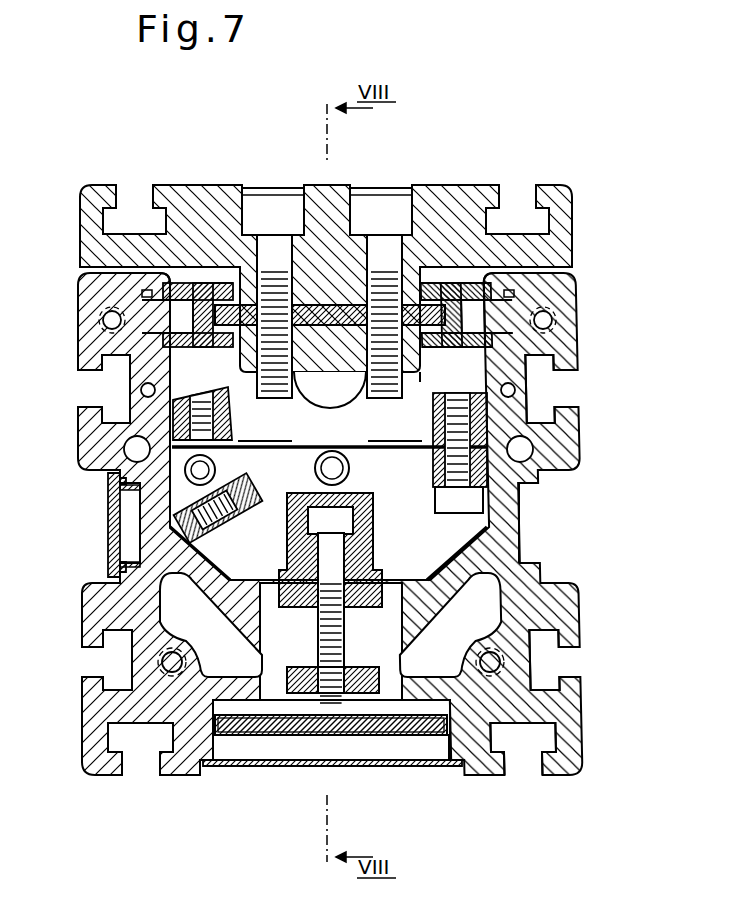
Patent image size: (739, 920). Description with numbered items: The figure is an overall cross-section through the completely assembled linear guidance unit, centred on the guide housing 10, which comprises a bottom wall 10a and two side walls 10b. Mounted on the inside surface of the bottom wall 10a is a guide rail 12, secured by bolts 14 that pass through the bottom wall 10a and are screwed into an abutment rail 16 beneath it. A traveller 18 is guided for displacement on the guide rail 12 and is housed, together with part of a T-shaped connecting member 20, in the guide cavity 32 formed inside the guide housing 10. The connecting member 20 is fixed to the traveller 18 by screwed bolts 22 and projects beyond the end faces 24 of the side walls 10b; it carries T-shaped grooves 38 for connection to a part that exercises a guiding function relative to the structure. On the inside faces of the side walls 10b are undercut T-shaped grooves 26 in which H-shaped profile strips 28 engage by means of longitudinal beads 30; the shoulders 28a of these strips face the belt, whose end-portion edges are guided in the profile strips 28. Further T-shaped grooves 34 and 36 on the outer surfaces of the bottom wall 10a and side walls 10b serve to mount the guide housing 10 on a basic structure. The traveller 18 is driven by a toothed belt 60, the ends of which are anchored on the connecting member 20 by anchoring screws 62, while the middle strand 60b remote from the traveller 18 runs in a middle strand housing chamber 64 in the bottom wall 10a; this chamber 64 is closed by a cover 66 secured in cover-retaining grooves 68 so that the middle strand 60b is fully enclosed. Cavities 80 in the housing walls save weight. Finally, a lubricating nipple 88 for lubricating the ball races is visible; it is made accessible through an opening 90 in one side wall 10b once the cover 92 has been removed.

The guide housing 10 is at (577, 455).
The bottom wall 10a is at (397, 612).
The side walls 10b is at (122, 472).
The guide rail 12 is at (374, 494).
The bolts 14 is at (344, 622).
The abutment rail 16 is at (302, 695).
The traveller 18 is at (266, 557).
The connecting member 20 is at (506, 197).
The screwed bolts 22 is at (172, 427).
The end faces 24 is at (100, 298).
The undercut T-shaped grooves 26 is at (112, 320).
The H-shaped profile strips 28 is at (197, 348).
The insert shoulder 28a is at (215, 280).
The longitudinal beads 30 is at (148, 290).
The guide cavity 32 is at (428, 378).
The T-shaped grooves 34 is at (137, 766).
The T-shaped grooves 36 is at (100, 386).
The grooves 38 is at (140, 205).
The toothed belt 60 is at (327, 336).
The middle strand 60b is at (472, 766).
The anchoring screws 62 is at (273, 212).
The middle strand housing chamber 64 is at (242, 745).
The cover 66 is at (378, 735).
The cover-retaining grooves 68 is at (200, 768).
The cavities 80 is at (163, 606).
The lubricating nipple 88 is at (224, 482).
The opening 90 is at (122, 543).
The cover 92 is at (108, 512).